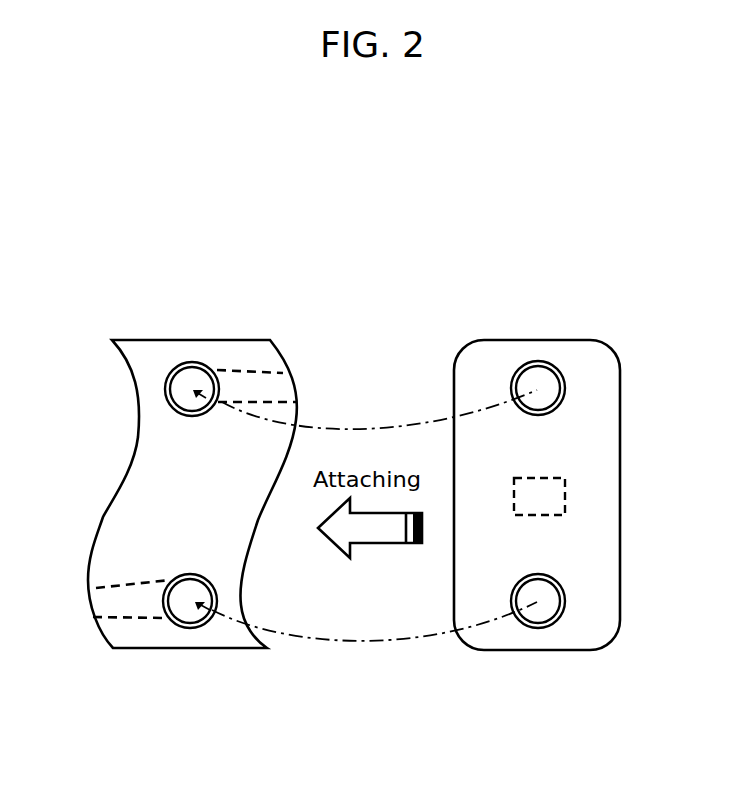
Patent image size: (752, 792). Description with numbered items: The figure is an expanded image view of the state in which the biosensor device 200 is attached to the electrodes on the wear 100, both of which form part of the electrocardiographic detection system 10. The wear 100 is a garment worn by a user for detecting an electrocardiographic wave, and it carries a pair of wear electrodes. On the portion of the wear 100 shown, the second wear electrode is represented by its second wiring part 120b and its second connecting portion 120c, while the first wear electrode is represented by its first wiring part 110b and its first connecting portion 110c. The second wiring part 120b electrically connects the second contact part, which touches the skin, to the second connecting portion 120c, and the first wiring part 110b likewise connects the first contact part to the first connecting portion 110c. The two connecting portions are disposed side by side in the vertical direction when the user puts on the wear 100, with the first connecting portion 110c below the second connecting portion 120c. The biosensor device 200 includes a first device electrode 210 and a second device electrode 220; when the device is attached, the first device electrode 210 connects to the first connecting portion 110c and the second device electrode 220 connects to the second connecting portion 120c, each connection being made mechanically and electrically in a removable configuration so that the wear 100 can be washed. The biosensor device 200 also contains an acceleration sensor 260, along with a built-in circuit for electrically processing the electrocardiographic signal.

The electrocardiographic detection system 10 is at (398, 261).
The wear 100 is at (157, 355).
The second wiring part 120b is at (260, 370).
The second connecting portion 120c is at (165, 393).
The first wiring part 110b is at (110, 617).
The first connecting portion 110c is at (212, 617).
The biosensor device 200 is at (498, 362).
The second device electrode 220 is at (565, 390).
The acceleration sensor 260 is at (566, 501).
The first device electrode 210 is at (565, 604).